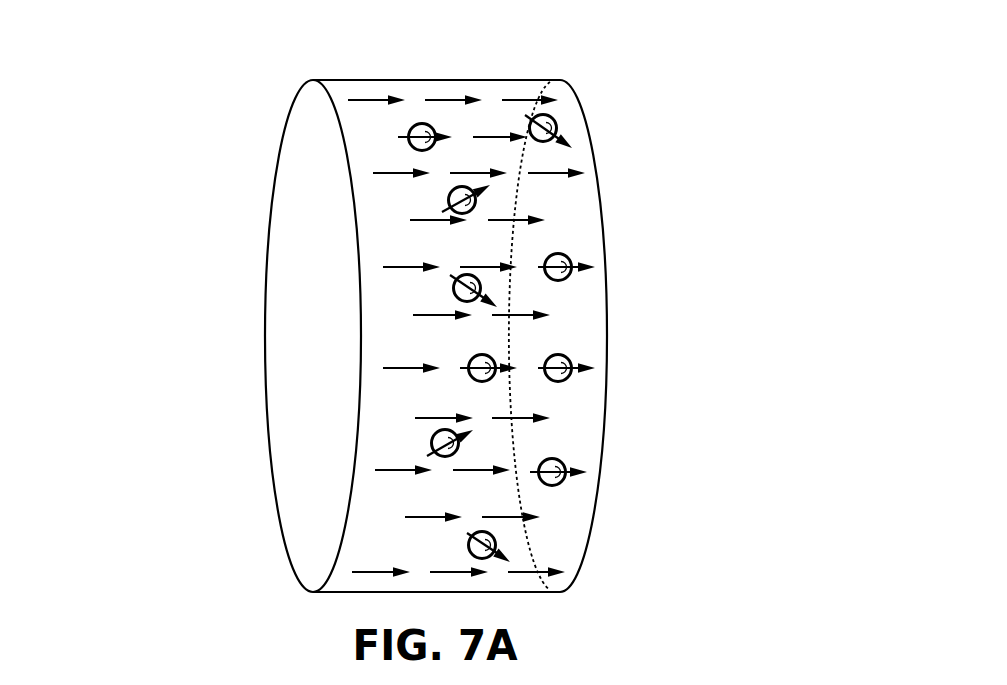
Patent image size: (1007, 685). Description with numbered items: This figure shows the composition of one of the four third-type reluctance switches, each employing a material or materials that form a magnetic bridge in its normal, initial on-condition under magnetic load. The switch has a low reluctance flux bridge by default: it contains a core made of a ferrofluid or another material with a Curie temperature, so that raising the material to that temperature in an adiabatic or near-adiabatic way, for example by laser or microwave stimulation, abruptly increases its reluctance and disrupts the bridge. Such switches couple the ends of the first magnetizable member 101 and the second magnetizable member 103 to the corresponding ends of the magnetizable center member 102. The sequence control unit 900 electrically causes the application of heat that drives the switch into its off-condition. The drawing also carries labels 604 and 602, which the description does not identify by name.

The first magnetizable member 101 is at (298, 315).
The second magnetizable member 103 is at (313, 336).
The magnetizable center member 102 is at (607, 303).
The sequence control unit 900 is at (528, 80).
The magnetic flux lines 604 is at (370, 565).
The conductors 602 is at (497, 538).